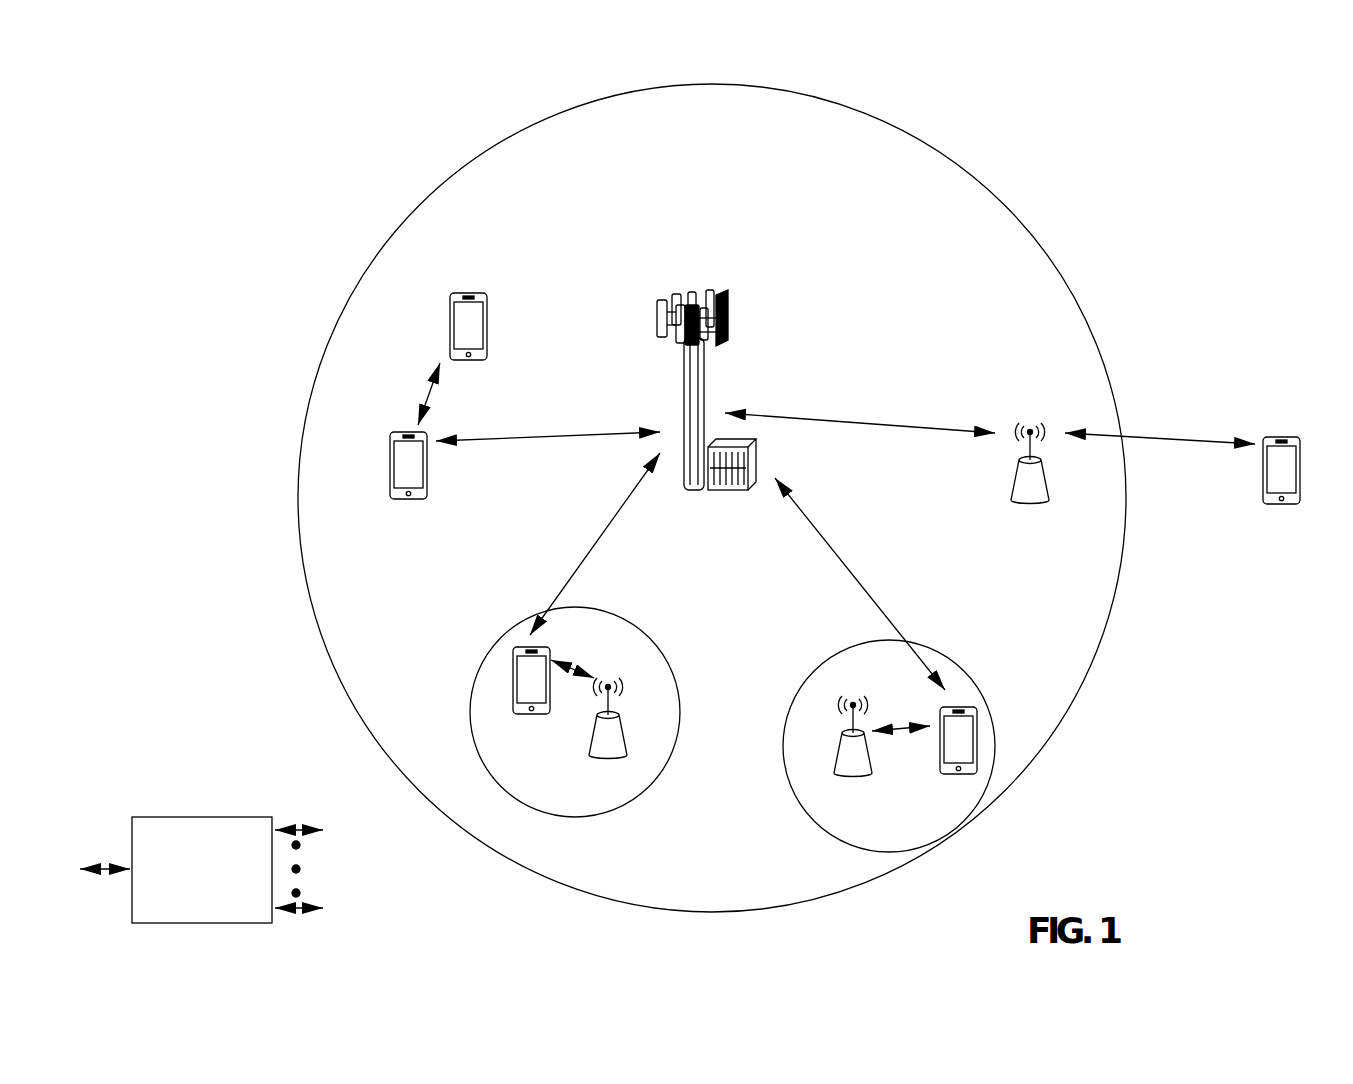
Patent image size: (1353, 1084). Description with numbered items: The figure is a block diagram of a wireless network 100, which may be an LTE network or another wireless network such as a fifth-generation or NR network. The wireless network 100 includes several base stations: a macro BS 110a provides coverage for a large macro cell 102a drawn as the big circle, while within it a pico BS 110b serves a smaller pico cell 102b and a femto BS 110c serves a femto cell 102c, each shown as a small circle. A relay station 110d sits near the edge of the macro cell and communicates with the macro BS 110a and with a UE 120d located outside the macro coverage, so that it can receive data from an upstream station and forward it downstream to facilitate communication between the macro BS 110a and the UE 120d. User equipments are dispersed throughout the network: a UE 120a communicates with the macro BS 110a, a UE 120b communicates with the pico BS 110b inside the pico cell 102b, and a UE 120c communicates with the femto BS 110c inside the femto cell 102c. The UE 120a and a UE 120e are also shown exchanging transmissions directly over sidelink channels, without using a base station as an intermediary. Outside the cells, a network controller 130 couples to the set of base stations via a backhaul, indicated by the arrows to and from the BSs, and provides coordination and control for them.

The wireless network 100 is at (186, 81).
The macro cell 102a is at (993, 193).
The pico cell 102b is at (666, 651).
The femto cell 102c is at (826, 650).
The macro BS 110a is at (697, 286).
The pico BS 110b is at (632, 744).
The femto BS 110c is at (838, 757).
The relay station 110d is at (1030, 424).
The UE 120a is at (390, 462).
The UE 120b is at (514, 714).
The UE 120c is at (942, 774).
The UE 120d is at (1292, 436).
The UE 120e is at (452, 312).
The network controller 130 is at (197, 816).